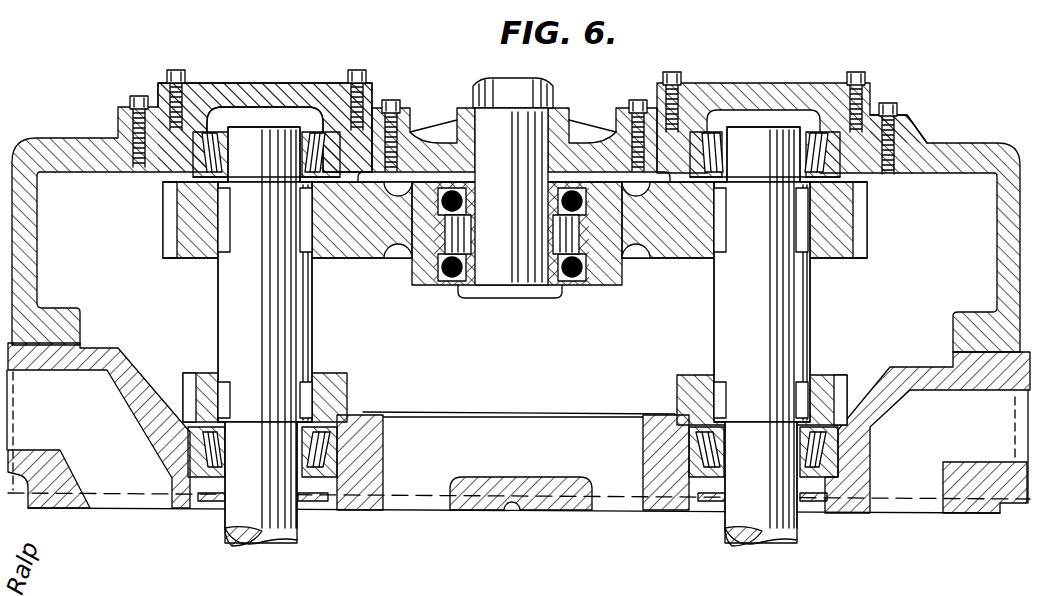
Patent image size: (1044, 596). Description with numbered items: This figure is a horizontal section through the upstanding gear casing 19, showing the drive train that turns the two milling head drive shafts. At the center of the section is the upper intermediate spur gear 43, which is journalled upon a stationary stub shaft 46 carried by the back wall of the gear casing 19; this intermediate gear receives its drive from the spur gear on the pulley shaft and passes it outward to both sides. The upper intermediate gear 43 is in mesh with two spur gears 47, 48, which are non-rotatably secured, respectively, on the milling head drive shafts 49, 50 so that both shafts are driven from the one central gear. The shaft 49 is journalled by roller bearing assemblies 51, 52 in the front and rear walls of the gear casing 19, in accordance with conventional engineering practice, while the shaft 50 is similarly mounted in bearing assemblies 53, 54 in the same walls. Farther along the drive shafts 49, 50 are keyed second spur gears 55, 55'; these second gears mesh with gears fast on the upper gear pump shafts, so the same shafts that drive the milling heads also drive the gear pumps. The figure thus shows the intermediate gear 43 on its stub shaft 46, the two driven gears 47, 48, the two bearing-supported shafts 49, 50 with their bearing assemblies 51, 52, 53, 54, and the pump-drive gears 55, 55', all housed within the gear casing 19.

The gear casing 19 is at (432, 150).
The upper intermediate spur gear 43 is at (613, 272).
The stationary stub shaft 46 is at (518, 277).
The spur gear 47 is at (197, 257).
The spur gear 48 is at (842, 217).
The milling head drive shaft 49 is at (233, 287).
The milling head drive shaft 50 is at (807, 317).
The roller bearing assembly 51 is at (205, 110).
The roller bearing assembly 52 is at (190, 458).
The bearing assembly 53 is at (873, 116).
The bearing assembly 54 is at (814, 477).
The second spur gear 55 is at (248, 393).
The second spur gear 55' is at (770, 384).